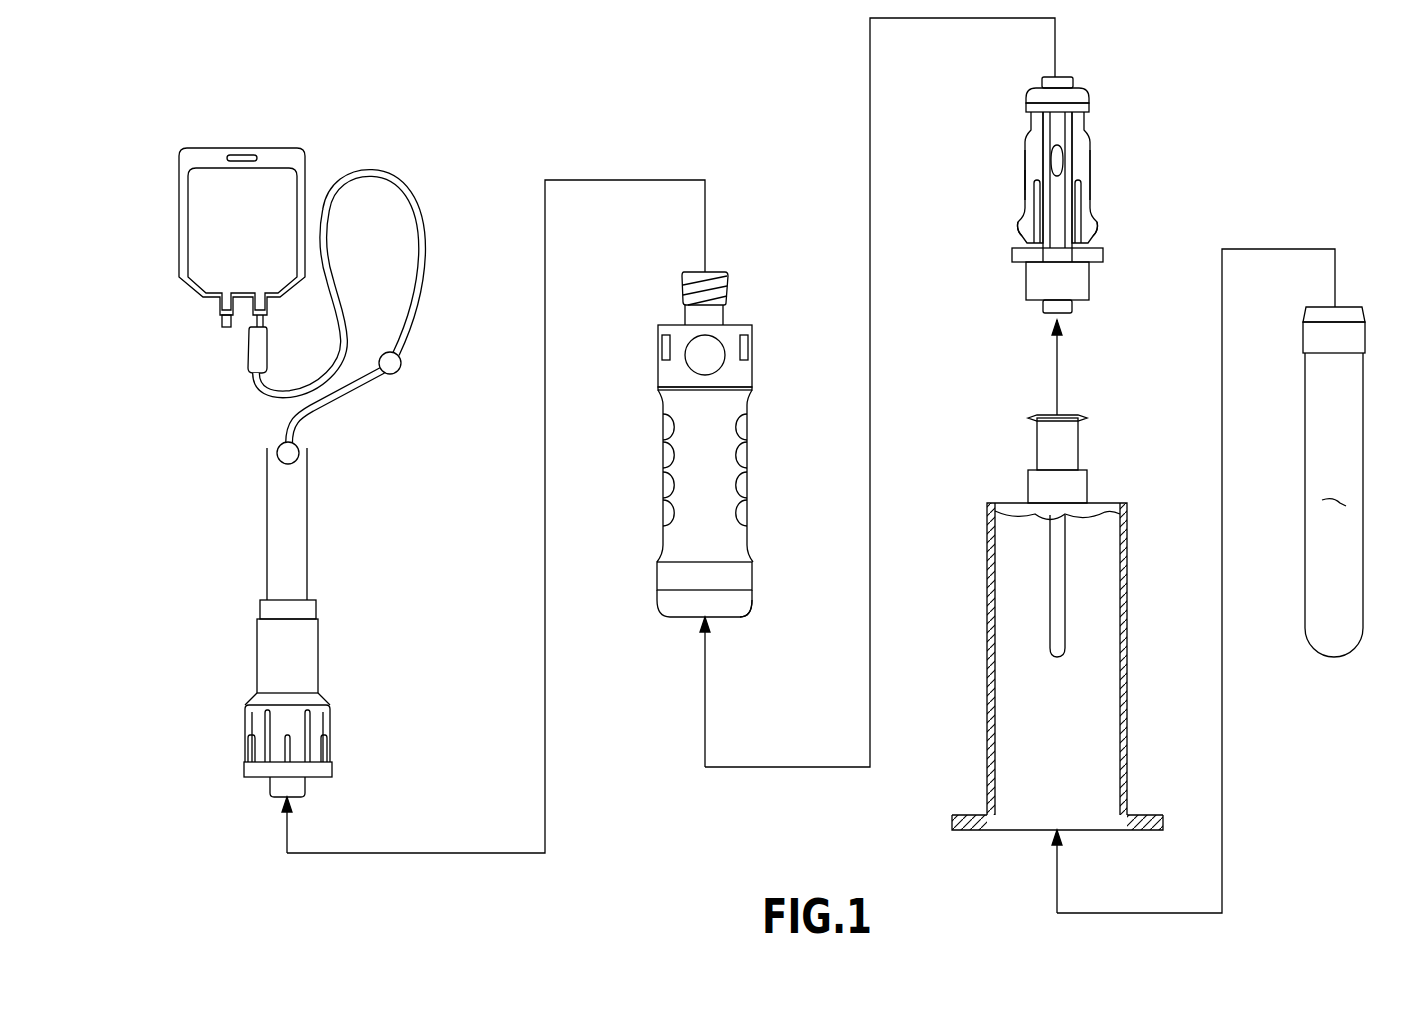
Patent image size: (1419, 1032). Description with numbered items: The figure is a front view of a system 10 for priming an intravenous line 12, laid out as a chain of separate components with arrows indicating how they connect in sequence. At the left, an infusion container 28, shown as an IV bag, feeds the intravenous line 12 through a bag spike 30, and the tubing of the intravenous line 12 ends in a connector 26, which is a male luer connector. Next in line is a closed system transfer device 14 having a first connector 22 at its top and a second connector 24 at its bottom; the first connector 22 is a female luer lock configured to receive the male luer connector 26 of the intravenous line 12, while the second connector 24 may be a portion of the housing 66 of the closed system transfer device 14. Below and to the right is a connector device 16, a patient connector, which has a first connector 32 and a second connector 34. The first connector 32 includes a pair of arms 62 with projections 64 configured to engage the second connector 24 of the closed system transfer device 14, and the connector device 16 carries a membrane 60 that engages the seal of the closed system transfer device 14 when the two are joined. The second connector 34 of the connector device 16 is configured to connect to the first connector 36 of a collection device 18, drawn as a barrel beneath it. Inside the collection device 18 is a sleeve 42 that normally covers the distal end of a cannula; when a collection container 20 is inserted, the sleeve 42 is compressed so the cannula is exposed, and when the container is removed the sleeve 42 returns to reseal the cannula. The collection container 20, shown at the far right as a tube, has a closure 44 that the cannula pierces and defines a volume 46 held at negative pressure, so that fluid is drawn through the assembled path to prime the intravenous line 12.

The system 10 is at (422, 99).
The intravenous line 12 is at (418, 207).
The closed system transfer device 14 is at (663, 427).
The connector device 16 is at (1088, 141).
The collection device 18 is at (988, 640).
The collection container 20 is at (1312, 378).
The first connector 22 is at (729, 286).
The second connector 24 is at (664, 617).
The connector 26 is at (253, 718).
The infusion container 28 is at (192, 255).
The bag spike 30 is at (264, 325).
The first connector 32 is at (1026, 178).
The second connector 34 is at (1033, 287).
The first connector 36 is at (1080, 443).
The sleeve 42 is at (1047, 577).
The closure 44 is at (1363, 326).
The volume 46 is at (1340, 503).
The membrane 60 is at (1050, 83).
The arms 62 is at (1033, 150).
The projections 64 is at (1094, 222).
The housing 66 is at (753, 600).